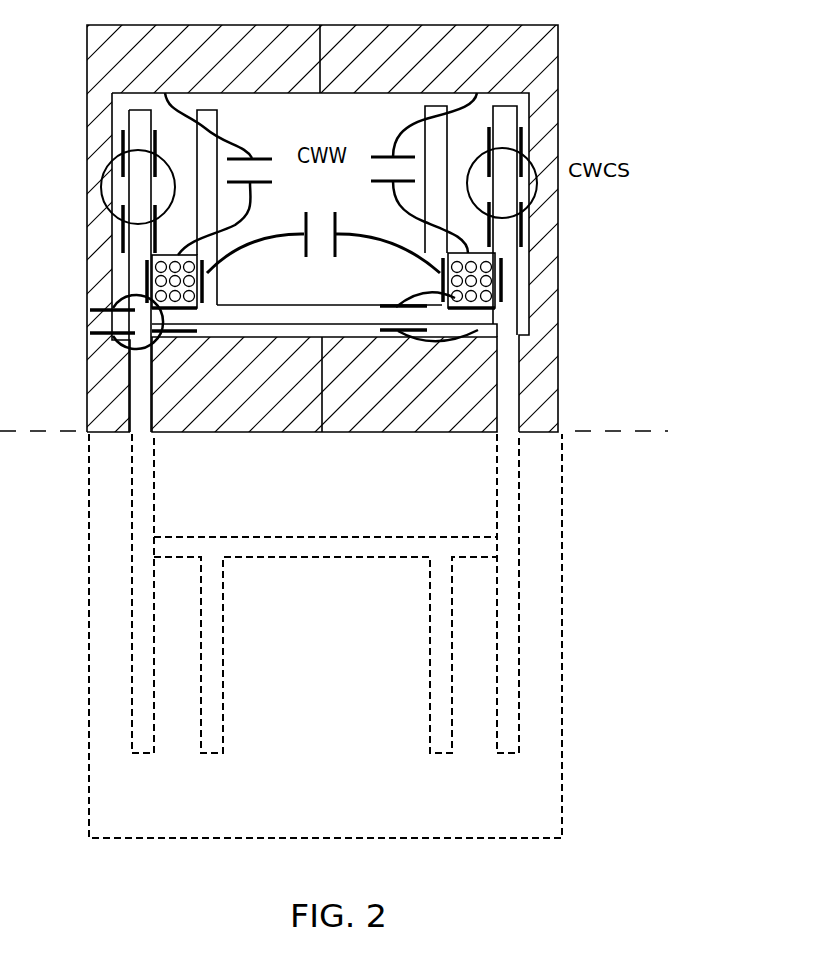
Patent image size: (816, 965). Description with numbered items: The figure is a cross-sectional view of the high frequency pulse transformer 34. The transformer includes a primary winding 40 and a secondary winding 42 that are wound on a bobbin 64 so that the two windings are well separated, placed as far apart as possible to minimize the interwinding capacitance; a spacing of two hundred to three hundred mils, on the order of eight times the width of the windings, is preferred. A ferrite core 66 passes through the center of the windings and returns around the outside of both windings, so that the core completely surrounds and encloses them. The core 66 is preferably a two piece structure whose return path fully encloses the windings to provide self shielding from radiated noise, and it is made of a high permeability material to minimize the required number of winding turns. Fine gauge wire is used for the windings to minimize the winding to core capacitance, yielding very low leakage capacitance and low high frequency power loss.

The pulse transformer 34 is at (586, 127).
The primary winding 40 is at (180, 256).
The secondary winding 42 is at (497, 257).
The bobbin 64 is at (272, 305).
The ferrite core 66 is at (410, 418).